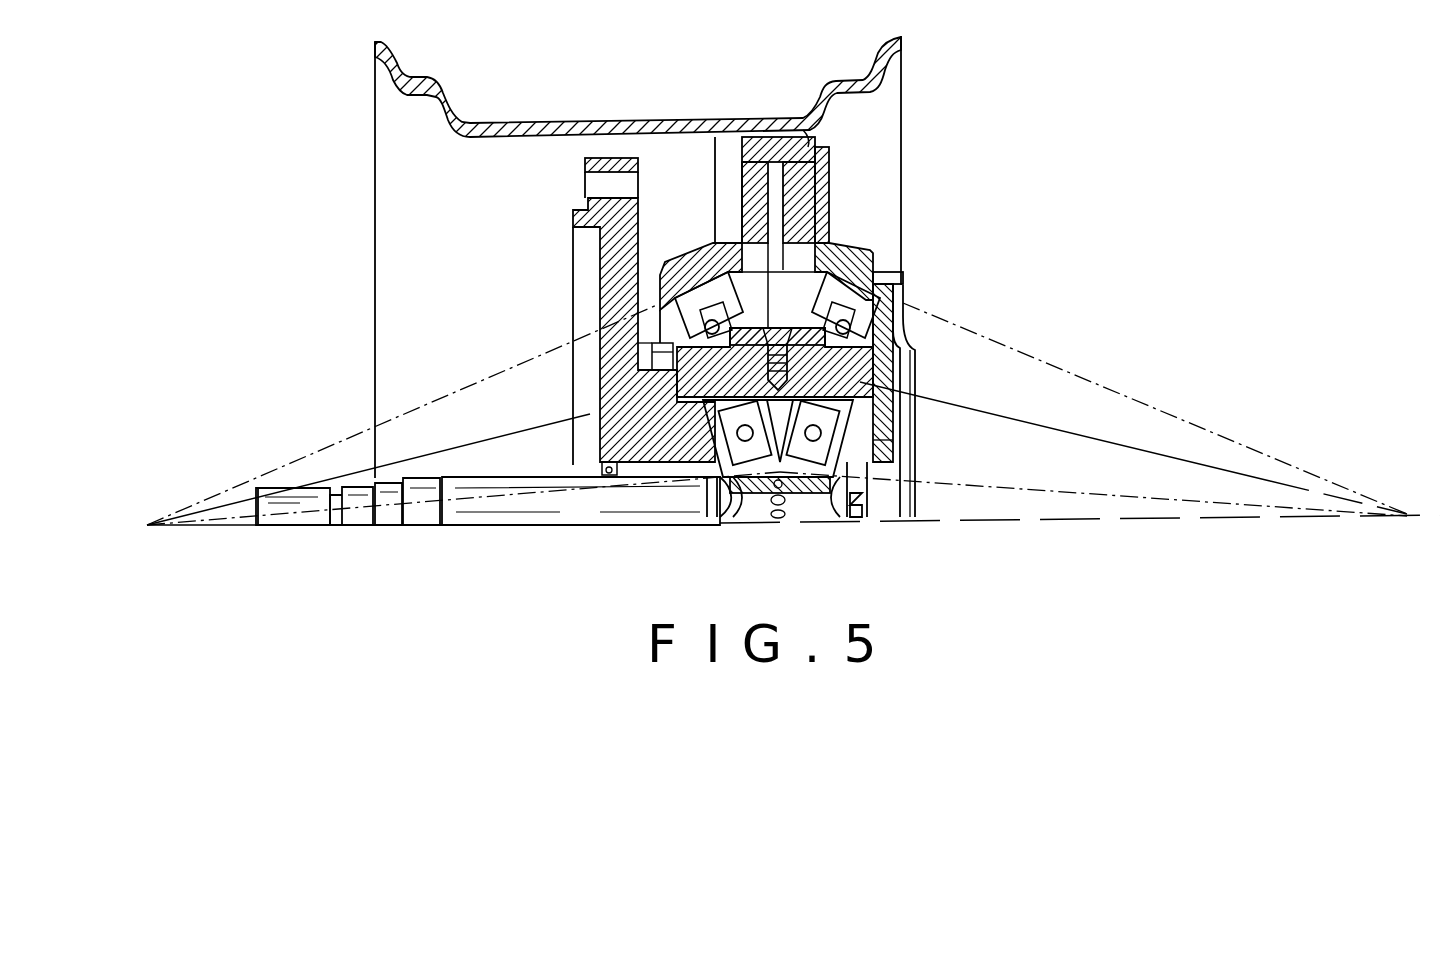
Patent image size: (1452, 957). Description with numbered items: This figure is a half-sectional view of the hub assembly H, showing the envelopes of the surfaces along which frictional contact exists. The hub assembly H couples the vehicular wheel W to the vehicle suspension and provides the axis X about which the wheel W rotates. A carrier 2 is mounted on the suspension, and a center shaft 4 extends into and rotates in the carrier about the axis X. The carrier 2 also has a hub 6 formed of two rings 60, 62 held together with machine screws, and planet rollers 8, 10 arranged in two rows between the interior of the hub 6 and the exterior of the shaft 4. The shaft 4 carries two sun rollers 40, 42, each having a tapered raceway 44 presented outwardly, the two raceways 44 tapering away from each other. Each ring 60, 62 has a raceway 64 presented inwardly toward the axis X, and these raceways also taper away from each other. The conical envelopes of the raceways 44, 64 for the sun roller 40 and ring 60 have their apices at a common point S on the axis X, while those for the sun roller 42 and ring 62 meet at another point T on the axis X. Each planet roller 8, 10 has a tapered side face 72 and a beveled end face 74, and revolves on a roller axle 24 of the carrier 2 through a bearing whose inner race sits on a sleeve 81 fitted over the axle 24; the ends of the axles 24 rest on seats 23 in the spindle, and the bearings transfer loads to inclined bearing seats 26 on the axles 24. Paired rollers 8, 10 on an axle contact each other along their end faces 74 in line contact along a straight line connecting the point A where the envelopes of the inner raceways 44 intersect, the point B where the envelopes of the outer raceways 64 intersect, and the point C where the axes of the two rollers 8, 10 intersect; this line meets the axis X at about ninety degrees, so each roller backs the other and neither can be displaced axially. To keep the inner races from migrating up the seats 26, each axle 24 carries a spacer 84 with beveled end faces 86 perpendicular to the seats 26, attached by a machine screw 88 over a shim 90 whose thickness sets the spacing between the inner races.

The vehicular wheel W is at (558, 112).
The carrier 2 is at (592, 297).
The center shaft 4 is at (486, 468).
The hub 6 is at (818, 156).
The planet roller 8 is at (680, 325).
The planet roller 10 is at (910, 305).
The seat 23 is at (870, 385).
The roller axle 24 is at (690, 427).
The bearing seat 26 is at (640, 338).
The sun roller 40 is at (758, 490).
The sun roller 42 is at (808, 493).
The tapered raceway 44 is at (602, 461).
The ring 60 is at (660, 265).
The ring 62 is at (880, 262).
The raceway 64 is at (710, 250).
The tapered side face 72 is at (668, 245).
The beveled end face 74 is at (740, 230).
The sleeve 81 is at (913, 360).
The spacer 84 is at (903, 282).
The end face 86 is at (910, 343).
The machine screw 88 is at (700, 415).
The shim 90 is at (895, 383).
The point of intersection of inner raceway envelopes A is at (778, 505).
The point of intersection of outer raceway envelopes B is at (785, 232).
The point of intersection of roller axes C is at (862, 440).
The common apex point S is at (459, 432).
The common apex point T is at (1080, 423).
The axis X is at (1441, 509).
The hub assembly H is at (602, 552).